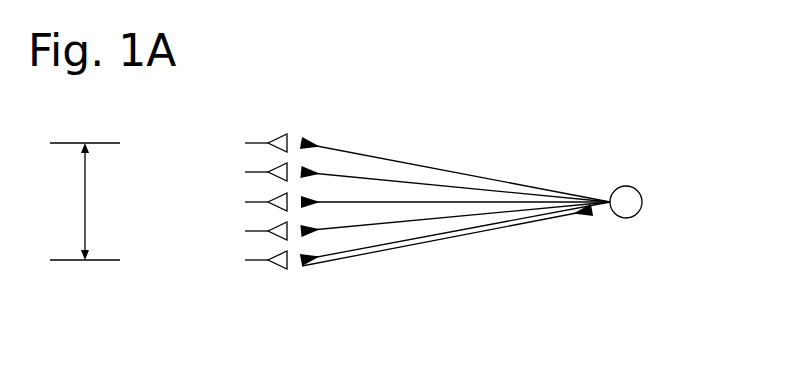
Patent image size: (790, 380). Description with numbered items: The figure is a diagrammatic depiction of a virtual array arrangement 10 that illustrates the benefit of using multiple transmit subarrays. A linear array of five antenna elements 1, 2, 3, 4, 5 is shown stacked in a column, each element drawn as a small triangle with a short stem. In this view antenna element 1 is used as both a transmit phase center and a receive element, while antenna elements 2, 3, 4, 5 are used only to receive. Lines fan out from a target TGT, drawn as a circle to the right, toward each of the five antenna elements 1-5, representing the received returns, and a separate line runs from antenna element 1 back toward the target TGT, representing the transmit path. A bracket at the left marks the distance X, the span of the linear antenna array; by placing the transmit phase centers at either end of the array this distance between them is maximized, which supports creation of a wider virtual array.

The antenna element 1 is at (260, 262).
The antenna element 2 is at (250, 232).
The antenna element 3 is at (251, 200).
The antenna element 4 is at (251, 172).
The antenna element 5 is at (260, 140).
The sensor system 10 is at (606, 77).
The distance X is at (85, 200).
The target TGT is at (628, 186).